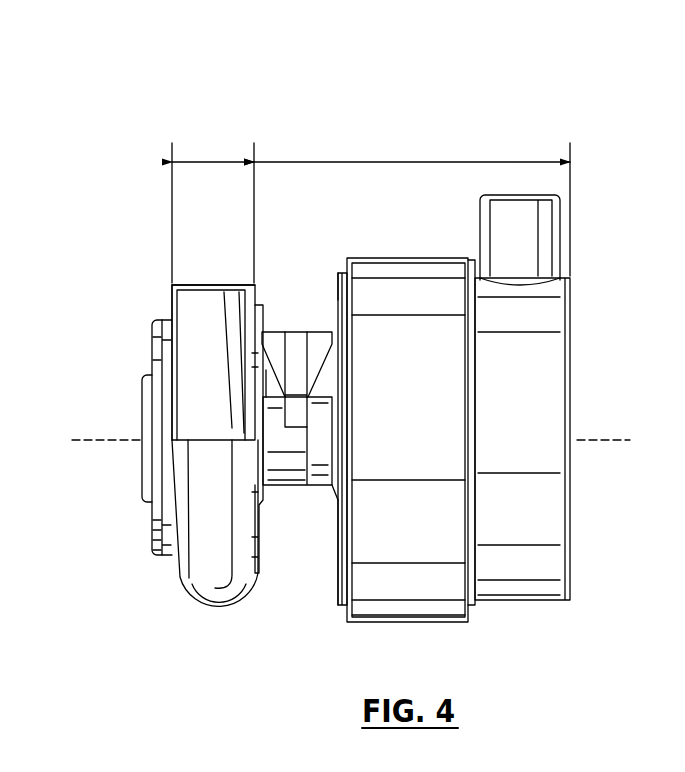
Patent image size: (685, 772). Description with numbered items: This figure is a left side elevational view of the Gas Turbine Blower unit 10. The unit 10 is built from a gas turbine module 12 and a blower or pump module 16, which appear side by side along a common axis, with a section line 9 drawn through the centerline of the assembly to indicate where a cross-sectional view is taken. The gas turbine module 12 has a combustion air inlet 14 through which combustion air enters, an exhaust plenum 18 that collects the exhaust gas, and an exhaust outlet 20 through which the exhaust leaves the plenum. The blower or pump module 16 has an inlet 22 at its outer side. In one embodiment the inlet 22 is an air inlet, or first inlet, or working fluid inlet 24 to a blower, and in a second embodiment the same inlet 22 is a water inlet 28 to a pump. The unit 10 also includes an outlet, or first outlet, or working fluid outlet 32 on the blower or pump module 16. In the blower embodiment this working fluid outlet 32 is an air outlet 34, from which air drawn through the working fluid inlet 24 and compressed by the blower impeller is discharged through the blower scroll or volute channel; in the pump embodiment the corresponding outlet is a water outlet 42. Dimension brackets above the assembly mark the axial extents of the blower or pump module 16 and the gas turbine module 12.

The section line 9- 9 is at (72, 440).
The Gas Turbine Blower unit 10 is at (556, 106).
The gas turbine module 12 is at (408, 161).
The combustion air inlet 14 is at (300, 330).
The blower or pump module 16 is at (211, 161).
The exhaust plenum 18 is at (557, 313).
The exhaust outlet 20 is at (548, 232).
The inlet 22 is at (137, 532).
The working fluid inlet 24 is at (140, 543).
The water inlet 28 is at (147, 558).
The working fluid outlet 32 is at (198, 279).
The air outlet 34 is at (158, 272).
The water outlet 42 is at (160, 277).